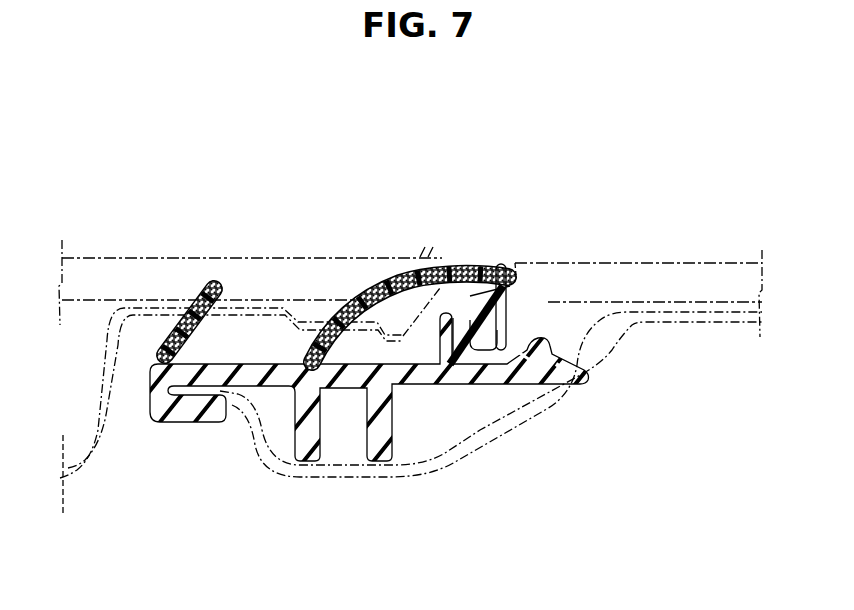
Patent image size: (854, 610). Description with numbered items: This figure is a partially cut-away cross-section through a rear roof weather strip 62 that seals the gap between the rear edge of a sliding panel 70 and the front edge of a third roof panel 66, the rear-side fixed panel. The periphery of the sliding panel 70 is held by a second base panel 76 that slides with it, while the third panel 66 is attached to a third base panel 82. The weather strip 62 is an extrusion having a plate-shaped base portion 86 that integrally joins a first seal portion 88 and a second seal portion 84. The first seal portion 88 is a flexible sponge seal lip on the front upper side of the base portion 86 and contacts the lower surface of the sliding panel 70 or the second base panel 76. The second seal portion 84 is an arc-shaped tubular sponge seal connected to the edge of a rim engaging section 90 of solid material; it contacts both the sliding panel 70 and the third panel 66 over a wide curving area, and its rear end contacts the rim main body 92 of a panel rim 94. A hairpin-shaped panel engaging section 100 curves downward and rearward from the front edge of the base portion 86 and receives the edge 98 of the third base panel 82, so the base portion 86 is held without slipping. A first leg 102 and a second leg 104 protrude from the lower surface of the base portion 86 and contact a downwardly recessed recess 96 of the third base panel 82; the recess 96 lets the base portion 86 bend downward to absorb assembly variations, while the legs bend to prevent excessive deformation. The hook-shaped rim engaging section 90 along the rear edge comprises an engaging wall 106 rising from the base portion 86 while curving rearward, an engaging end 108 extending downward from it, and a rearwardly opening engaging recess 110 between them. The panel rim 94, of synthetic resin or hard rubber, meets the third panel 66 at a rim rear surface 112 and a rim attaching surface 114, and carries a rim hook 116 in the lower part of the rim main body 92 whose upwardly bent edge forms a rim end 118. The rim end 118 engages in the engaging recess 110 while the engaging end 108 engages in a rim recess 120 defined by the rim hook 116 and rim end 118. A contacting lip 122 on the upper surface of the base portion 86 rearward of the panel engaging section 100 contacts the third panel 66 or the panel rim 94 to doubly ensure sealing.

The rear roof weather strip 62 is at (283, 407).
The third roof panel 66 is at (707, 261).
The sliding panel 70 is at (147, 257).
The second base panel 76 is at (88, 474).
The third base panel 82 is at (712, 325).
The second seal portion 84 is at (453, 268).
The base portion 86 is at (423, 386).
The first seal portion 88 is at (211, 281).
The rim engaging section 90 is at (497, 265).
The rim main body 92 is at (528, 309).
The panel rim 94 is at (620, 380).
The recess 96 is at (337, 474).
The edge 98 is at (197, 420).
The panel engaging section 100 is at (177, 413).
The first leg 102 is at (297, 462).
The second leg 104 is at (380, 462).
The engaging wall 106 is at (440, 386).
The engaging end 108 is at (537, 296).
The engaging recess 110 is at (466, 363).
The rim rear surface 112 is at (543, 285).
The rim attaching surface 114 is at (632, 326).
The rim hook 116 is at (517, 386).
The rim end 118 is at (483, 386).
The rim recess 120 is at (537, 386).
The contacting lip 122 is at (552, 318).